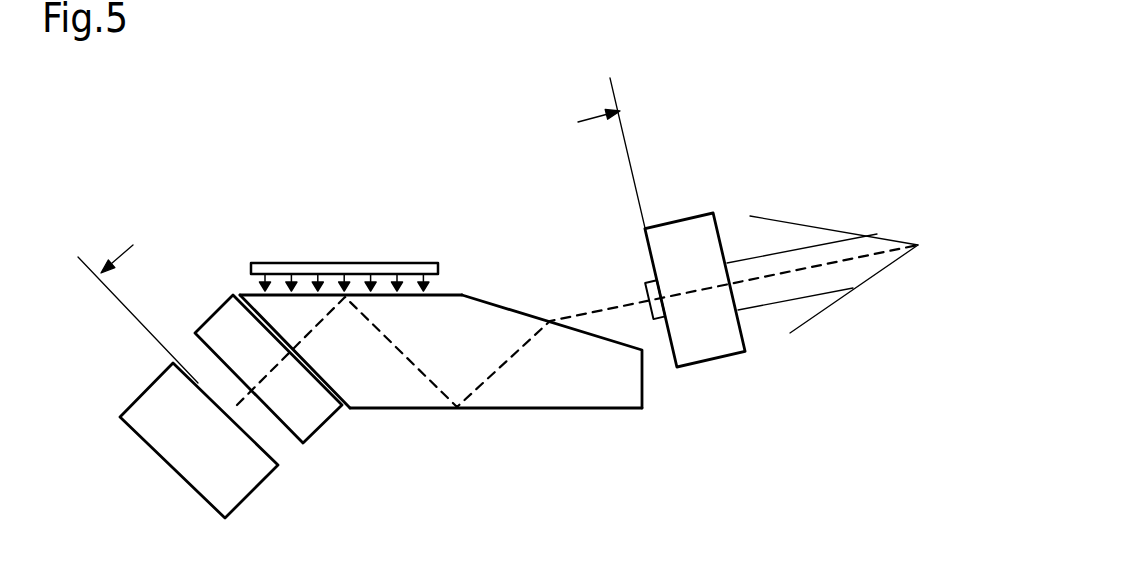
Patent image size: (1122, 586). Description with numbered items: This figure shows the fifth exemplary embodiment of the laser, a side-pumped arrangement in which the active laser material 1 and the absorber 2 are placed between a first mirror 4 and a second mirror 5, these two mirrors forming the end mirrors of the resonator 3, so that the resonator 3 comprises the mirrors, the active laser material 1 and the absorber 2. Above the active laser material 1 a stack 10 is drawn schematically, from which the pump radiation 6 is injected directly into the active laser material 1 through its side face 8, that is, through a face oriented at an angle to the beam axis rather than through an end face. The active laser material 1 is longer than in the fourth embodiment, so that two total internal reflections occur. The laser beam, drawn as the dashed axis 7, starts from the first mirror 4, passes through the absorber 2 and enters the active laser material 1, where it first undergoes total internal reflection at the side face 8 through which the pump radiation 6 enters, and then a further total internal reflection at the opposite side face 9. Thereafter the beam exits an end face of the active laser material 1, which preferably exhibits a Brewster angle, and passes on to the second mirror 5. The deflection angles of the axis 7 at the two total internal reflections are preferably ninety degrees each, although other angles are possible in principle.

The active laser material 1 is at (577, 327).
The absorber 2 is at (225, 330).
The resonator 3 is at (135, 372).
The first mirror 4 is at (180, 443).
The second mirror 5 is at (683, 243).
The pump radiation 6 is at (344, 226).
The axis of the laser beam 7 is at (405, 355).
The side face 8 is at (451, 294).
The opposite side face 9 is at (522, 409).
The stack 10 is at (346, 265).